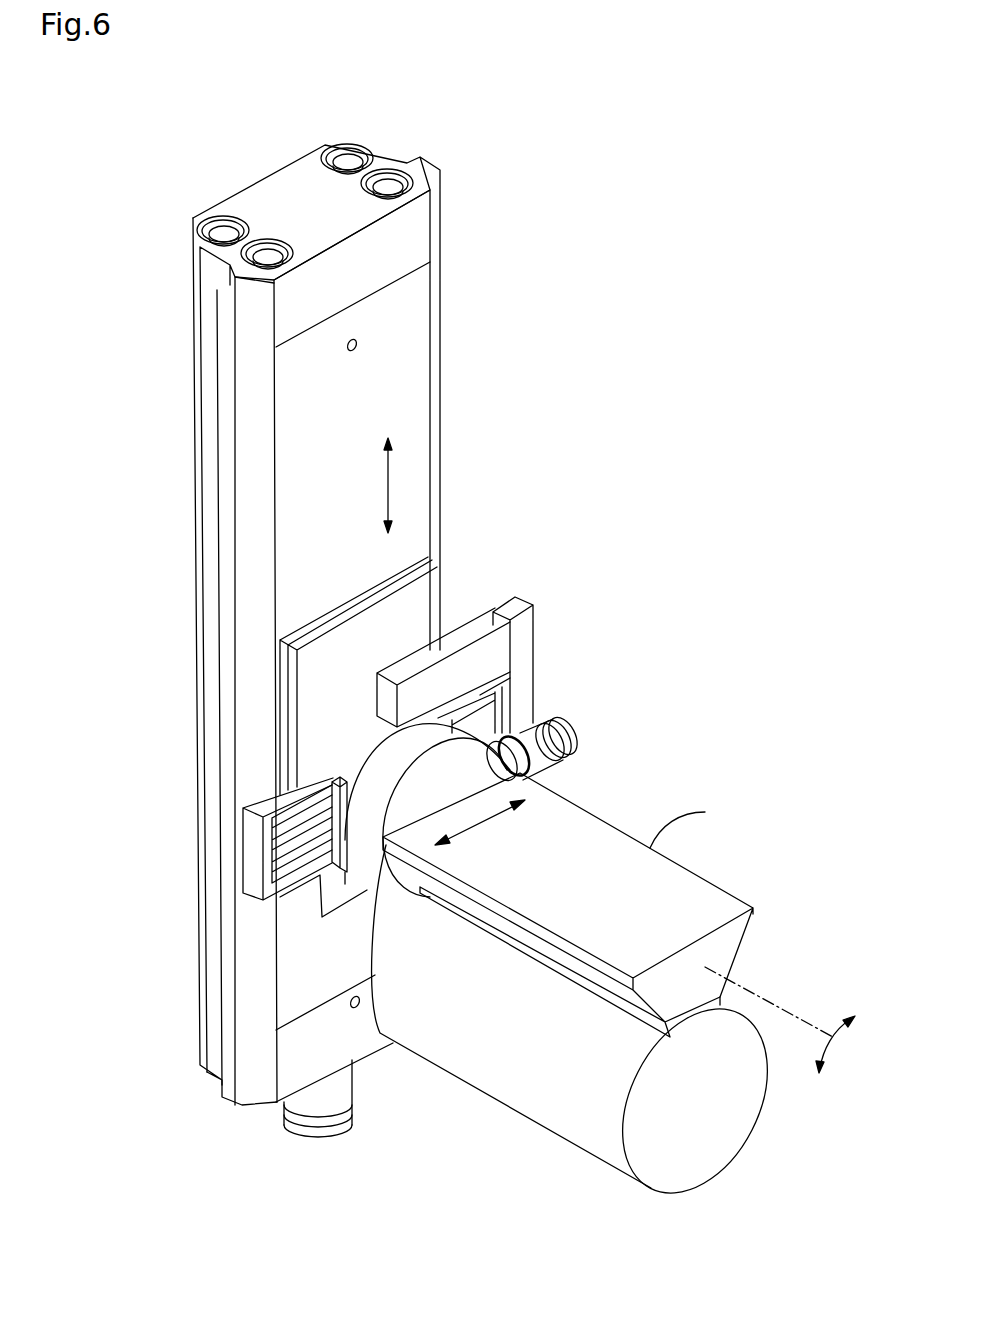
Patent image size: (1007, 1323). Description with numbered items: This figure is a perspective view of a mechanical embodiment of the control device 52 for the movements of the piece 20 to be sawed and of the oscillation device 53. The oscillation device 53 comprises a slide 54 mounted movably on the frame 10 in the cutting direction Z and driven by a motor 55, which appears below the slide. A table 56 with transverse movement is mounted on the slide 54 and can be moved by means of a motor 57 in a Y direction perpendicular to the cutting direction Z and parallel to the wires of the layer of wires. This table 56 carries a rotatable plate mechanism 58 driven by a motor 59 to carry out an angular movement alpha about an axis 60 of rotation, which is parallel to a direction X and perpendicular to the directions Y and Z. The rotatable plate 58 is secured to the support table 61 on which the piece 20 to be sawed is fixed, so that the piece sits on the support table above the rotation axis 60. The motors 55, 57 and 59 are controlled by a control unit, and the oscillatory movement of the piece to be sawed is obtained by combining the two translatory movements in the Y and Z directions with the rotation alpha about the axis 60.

The frame 10 is at (213, 663).
The piece to be sawed 20 is at (730, 1132).
The control device 52 is at (449, 394).
The oscillation device 53 is at (187, 946).
The slide 54 is at (417, 290).
The motor 55 is at (322, 1123).
The table 56 is at (332, 810).
The motor 57 is at (410, 702).
The rotatable plate mechanism 58 is at (378, 862).
The motor 59 is at (540, 748).
The axis of rotation 60 is at (840, 1040).
The support table 61 is at (735, 900).